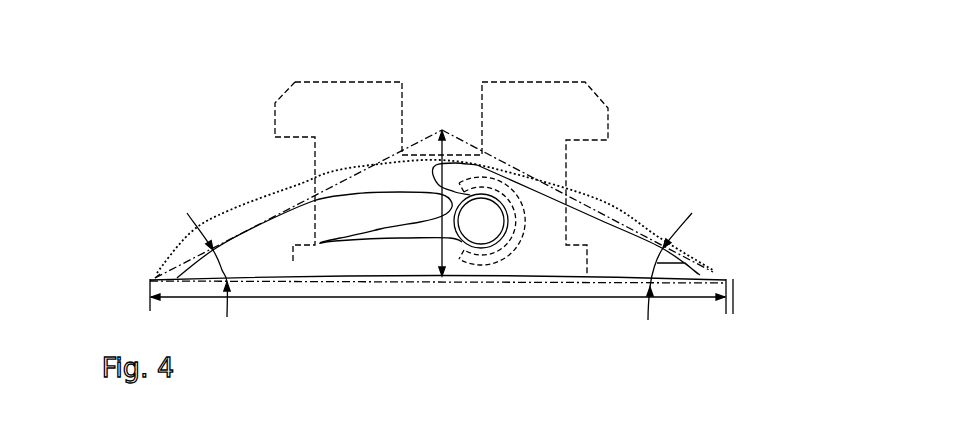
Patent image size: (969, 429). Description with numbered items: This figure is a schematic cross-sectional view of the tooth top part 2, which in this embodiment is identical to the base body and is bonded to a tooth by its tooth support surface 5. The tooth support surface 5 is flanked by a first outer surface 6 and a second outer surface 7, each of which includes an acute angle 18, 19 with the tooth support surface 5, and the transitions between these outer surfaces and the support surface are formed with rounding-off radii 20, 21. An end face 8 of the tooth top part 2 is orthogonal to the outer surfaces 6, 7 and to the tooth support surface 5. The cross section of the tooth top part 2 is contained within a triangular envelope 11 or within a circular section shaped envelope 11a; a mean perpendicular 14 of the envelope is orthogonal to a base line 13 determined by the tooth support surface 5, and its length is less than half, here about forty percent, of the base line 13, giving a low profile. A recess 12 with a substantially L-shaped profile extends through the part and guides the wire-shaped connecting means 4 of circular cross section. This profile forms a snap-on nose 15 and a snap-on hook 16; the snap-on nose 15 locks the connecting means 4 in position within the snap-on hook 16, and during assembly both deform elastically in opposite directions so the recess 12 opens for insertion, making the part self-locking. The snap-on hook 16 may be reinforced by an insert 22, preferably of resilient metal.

The tooth top part 2 is at (627, 130).
The connecting means 4 is at (483, 210).
The tooth support surface 5 is at (582, 290).
The first outer surface 6 is at (353, 192).
The second outer surface 7 is at (543, 192).
The end face 8 is at (613, 240).
The triangular envelope 11 is at (422, 142).
The circular section shaped envelope 11a is at (300, 187).
The recess 12 is at (327, 217).
The base line 13 is at (308, 298).
The mean perpendicular 14 is at (450, 238).
The snap-on nose 15 is at (395, 203).
The snap-on hook 16 is at (458, 170).
The acute angle 18 is at (208, 262).
The acute angle 19 is at (705, 272).
The rounding-off radius 20 is at (170, 272).
The rounding-off radius 21 is at (717, 273).
The insert 22 is at (500, 252).